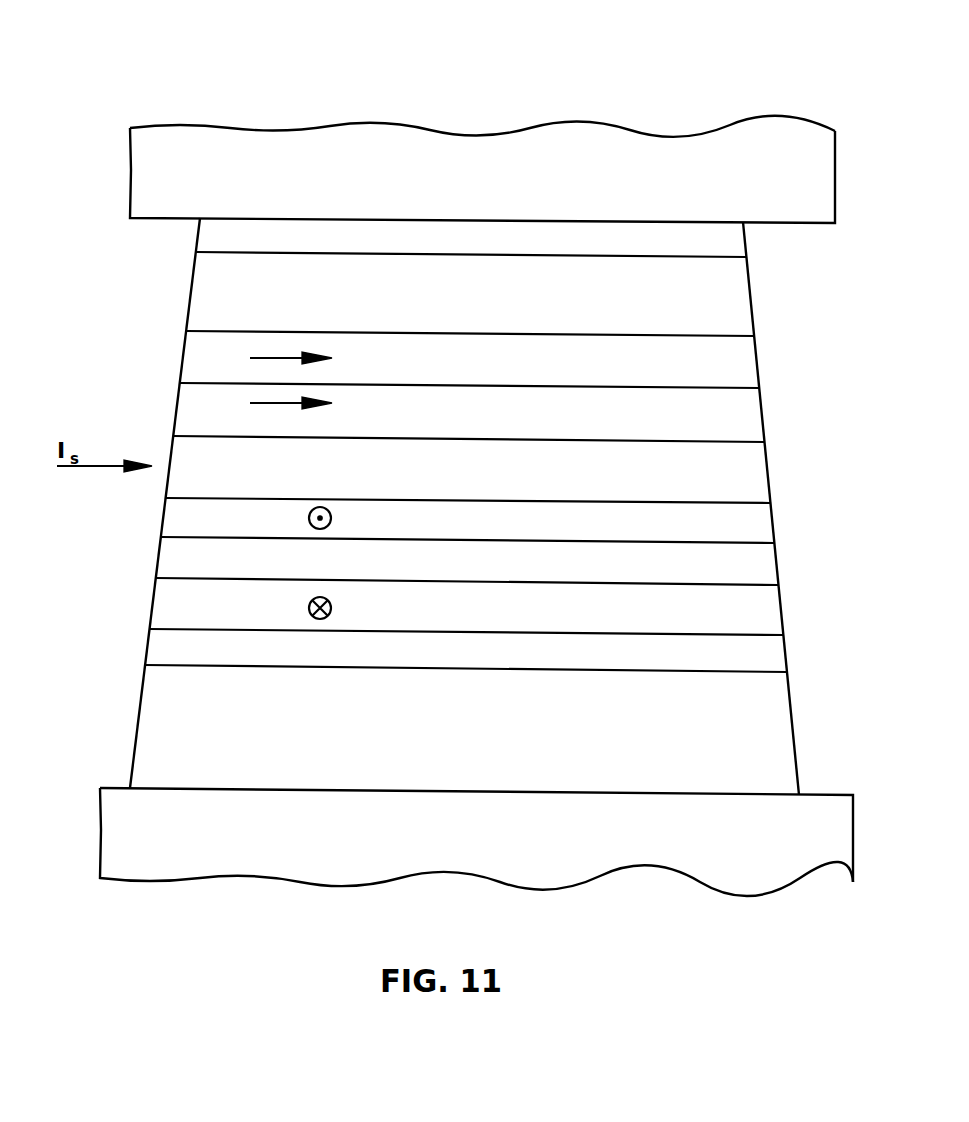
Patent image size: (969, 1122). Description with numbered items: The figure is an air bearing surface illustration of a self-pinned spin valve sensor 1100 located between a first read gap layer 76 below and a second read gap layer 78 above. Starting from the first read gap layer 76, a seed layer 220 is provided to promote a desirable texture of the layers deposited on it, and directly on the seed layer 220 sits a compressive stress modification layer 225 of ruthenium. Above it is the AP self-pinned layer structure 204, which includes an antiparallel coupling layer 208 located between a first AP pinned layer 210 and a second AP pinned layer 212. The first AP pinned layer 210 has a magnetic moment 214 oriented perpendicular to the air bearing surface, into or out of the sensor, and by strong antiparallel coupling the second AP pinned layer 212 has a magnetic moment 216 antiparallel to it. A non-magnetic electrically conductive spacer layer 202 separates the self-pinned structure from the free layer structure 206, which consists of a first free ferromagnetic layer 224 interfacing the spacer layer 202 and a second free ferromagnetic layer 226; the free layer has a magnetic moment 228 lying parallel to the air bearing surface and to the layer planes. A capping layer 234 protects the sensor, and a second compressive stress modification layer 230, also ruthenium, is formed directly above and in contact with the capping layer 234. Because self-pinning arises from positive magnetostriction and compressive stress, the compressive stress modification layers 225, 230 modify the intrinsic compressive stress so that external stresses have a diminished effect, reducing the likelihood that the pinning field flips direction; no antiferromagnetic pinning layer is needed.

The spin valve sensor 1100 is at (25, 788).
The second read gap layer 78 is at (815, 172).
The first read gap layer 76 is at (757, 865).
The compressive stress modification layer 230 is at (748, 241).
The capping layer 234 is at (752, 297).
The free layer structure 206 is at (74, 436).
The second free ferromagnetic layer 226 is at (757, 358).
The first free ferromagnetic layer 224 is at (763, 412).
The magnetic moment 228 is at (270, 403).
The spacer layer 202 is at (768, 465).
The AP self-pinned layer structure 204 is at (68, 498).
The second AP pinned layer 212 is at (773, 518).
The antiparallel coupling layer 208 is at (778, 563).
The first AP pinned layer 210 is at (782, 608).
The magnetic moment 216 is at (309, 518).
The magnetic moment 214 is at (309, 608).
The compressive stress modification layer 225 is at (787, 652).
The seed layer 220 is at (793, 708).